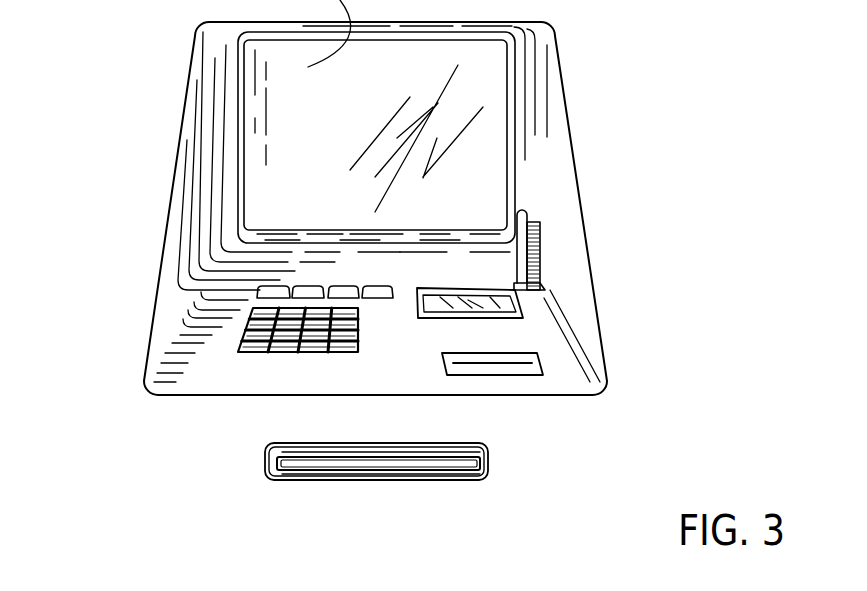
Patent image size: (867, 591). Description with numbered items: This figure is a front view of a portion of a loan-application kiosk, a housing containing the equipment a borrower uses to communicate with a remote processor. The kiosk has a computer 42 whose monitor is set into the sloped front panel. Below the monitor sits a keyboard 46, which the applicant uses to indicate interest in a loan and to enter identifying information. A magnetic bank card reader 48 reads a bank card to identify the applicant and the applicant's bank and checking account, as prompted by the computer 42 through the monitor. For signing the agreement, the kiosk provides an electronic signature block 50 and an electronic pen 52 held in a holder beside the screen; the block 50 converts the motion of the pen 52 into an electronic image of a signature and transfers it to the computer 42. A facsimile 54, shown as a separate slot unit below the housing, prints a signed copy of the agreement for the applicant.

The computer 42 is at (98, 310).
The keyboard 46 is at (283, 352).
The magnetic bank card reader 48 is at (517, 376).
The electronic signature block 50 is at (495, 319).
The electronic pen 52 is at (537, 253).
The facsimile 54 is at (383, 481).